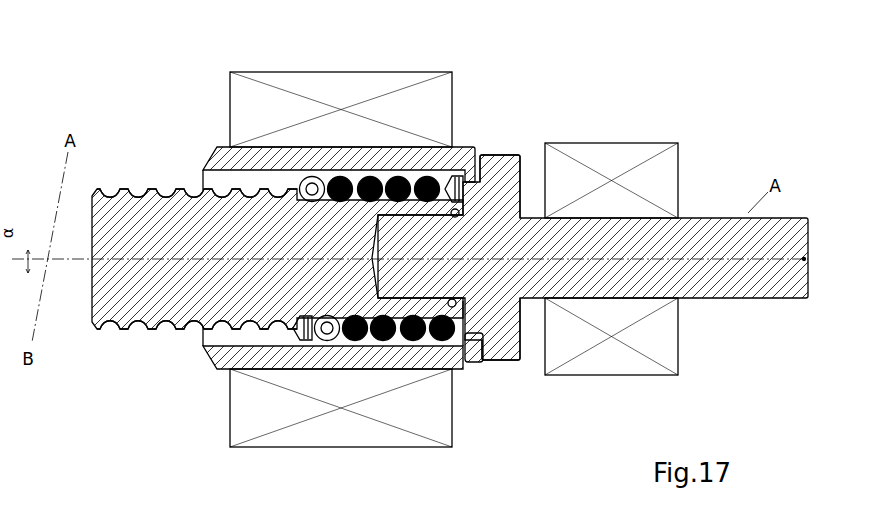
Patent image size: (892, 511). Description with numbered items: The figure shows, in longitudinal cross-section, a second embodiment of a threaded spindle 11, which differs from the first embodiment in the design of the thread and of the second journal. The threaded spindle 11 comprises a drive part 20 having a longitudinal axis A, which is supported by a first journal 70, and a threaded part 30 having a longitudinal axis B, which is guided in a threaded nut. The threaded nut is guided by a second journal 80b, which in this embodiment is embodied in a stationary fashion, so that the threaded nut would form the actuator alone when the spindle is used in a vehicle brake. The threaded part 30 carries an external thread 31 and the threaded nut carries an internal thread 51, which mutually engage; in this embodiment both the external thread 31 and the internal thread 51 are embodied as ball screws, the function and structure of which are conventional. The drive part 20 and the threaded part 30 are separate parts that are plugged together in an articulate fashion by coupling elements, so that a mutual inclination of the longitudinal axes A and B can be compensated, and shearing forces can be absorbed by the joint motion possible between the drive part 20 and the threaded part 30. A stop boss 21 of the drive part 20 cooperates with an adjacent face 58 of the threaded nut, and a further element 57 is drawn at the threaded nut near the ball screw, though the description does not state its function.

The threaded spindle 11 is at (705, 133).
The drive part 20 is at (765, 298).
The stop boss 21 is at (507, 365).
The threaded part 30 is at (148, 297).
The external thread 31 is at (185, 320).
The internal thread 51 is at (382, 178).
The plunger 57 is at (476, 165).
The adjacent face 58 is at (478, 363).
The first journal 70 is at (600, 158).
The second journal 80b is at (317, 85).